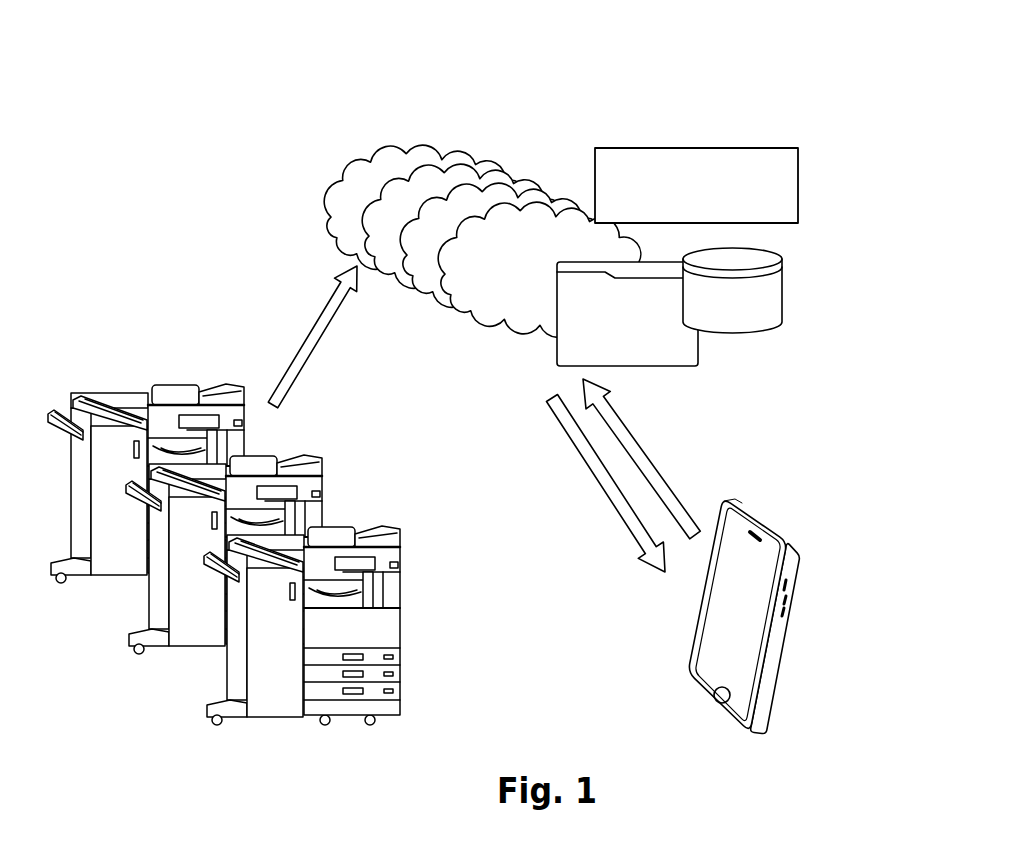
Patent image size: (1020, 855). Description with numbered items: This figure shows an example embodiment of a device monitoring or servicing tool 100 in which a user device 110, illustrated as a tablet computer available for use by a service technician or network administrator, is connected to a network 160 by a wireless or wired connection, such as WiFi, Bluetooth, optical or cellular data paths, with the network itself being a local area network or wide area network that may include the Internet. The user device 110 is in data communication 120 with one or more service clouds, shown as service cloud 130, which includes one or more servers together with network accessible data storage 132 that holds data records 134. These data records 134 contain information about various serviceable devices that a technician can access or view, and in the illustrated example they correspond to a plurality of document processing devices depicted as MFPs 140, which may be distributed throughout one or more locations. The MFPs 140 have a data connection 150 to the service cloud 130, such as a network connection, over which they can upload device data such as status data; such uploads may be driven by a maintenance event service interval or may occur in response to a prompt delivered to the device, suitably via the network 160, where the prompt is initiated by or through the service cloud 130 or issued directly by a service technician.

The device monitoring or servicing tool 100 is at (620, 63).
The user device 110 is at (712, 625).
The data communication 120 is at (570, 474).
The service cloud 130 is at (697, 148).
The network accessible data storage 132 is at (752, 333).
The data records 134 is at (658, 366).
The MFPs 140 is at (139, 358).
The data connection 150 is at (305, 343).
The network 160 is at (407, 152).